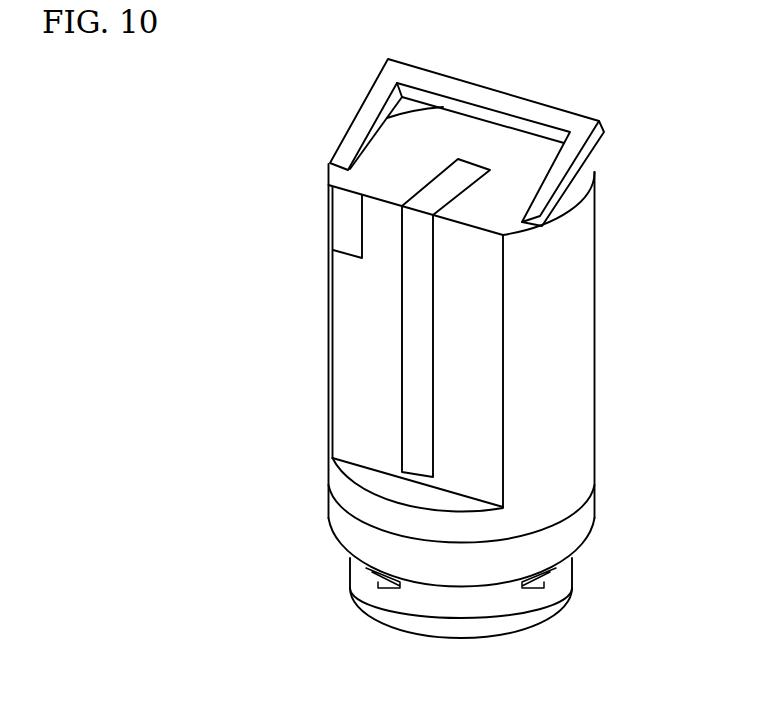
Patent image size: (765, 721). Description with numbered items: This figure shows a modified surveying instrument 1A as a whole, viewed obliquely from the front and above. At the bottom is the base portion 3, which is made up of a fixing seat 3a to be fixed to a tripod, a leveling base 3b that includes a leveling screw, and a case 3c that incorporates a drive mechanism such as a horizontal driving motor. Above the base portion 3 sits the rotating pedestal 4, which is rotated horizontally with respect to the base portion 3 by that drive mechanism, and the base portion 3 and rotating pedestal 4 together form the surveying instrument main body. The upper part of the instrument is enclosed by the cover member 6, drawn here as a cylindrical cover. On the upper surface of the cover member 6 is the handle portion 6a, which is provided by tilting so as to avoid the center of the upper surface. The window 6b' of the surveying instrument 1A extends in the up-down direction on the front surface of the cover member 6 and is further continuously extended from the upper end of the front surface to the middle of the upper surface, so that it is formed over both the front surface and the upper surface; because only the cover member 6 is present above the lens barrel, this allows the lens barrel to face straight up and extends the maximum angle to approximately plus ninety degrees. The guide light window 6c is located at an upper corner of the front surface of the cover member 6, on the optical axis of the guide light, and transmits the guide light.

The surveying instrument 1A is at (261, 95).
The base portion 3 is at (582, 524).
The fixing seat 3a is at (353, 593).
The leveling base 3b is at (573, 582).
The case 3c is at (328, 523).
The rotating pedestal 4 is at (328, 488).
The cover member 6 is at (582, 343).
The handle portion 6a is at (532, 107).
The window 6b' is at (374, 318).
The guide light window 6c is at (348, 226).